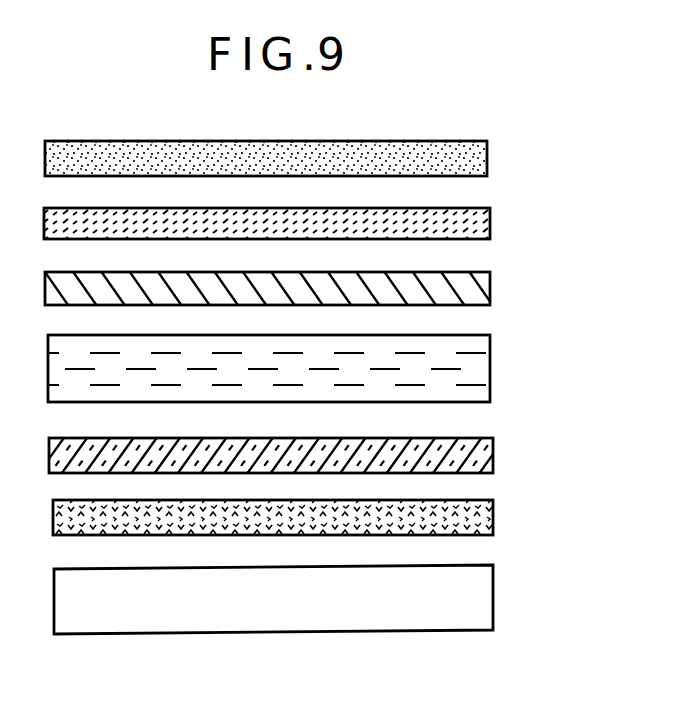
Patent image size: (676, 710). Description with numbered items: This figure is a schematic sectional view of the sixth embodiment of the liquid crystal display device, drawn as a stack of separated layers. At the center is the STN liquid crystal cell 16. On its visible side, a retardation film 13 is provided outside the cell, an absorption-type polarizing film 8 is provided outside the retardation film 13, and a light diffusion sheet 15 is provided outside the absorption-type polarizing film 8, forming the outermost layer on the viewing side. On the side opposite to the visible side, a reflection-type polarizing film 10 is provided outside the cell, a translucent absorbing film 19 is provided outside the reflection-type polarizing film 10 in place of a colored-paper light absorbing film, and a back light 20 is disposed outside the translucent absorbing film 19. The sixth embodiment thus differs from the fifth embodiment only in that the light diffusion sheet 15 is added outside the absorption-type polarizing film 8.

The light diffusion sheet 15 is at (487, 155).
The absorption-type polarizing film 8 is at (490, 219).
The retardation film 13 is at (478, 290).
The STN liquid crystal cell 16 is at (478, 371).
The reflection-type polarizing film 10 is at (478, 454).
The translucent absorbing film 19 is at (493, 517).
The back light 20 is at (480, 601).